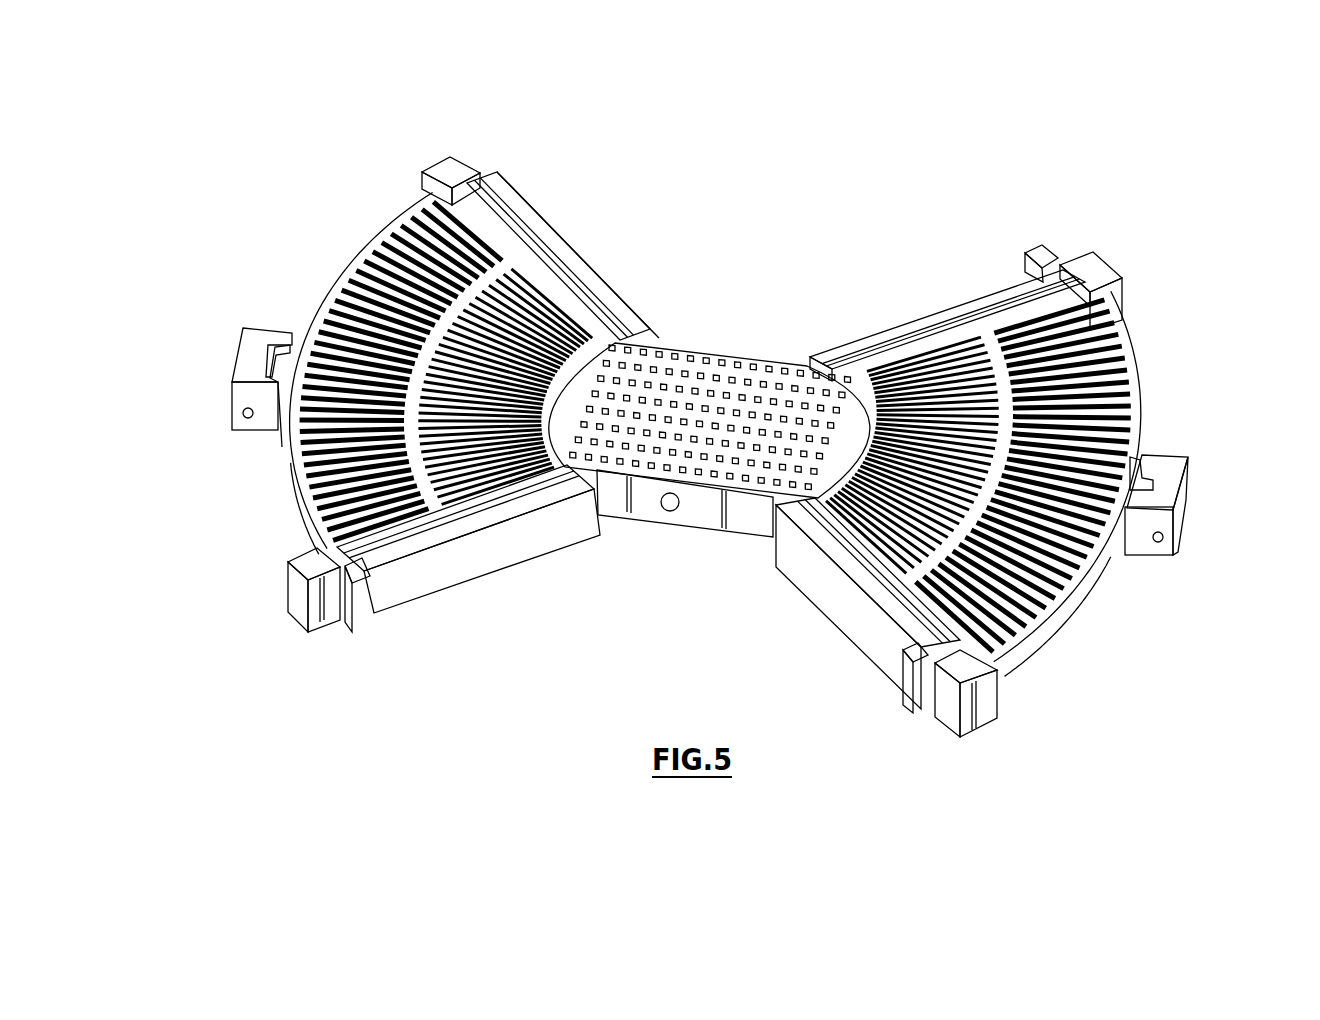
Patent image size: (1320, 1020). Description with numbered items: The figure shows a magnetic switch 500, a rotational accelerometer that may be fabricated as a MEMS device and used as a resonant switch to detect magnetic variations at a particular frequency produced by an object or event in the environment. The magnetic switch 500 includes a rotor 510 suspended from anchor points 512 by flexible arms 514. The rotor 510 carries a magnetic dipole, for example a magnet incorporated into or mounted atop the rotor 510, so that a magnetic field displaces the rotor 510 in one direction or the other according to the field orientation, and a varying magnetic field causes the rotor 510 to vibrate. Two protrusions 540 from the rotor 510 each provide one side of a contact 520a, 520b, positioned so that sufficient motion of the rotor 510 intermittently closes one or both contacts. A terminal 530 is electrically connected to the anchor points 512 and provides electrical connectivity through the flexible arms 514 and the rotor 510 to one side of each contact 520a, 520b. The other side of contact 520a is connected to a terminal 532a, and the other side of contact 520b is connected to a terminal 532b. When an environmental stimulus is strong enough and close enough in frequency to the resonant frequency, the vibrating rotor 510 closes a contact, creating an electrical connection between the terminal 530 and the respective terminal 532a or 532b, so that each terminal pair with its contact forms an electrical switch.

The magnetic switch 500 is at (1043, 149).
The rotor 510 is at (455, 318).
The anchor points 512 is at (457, 170).
The flexible arms 514 is at (552, 268).
The contact 520a is at (263, 352).
The contact 520b is at (1185, 480).
The terminal 530 is at (670, 511).
The terminal 532a is at (247, 363).
The terminal 532b is at (1164, 537).
The protrusions 540 is at (283, 346).